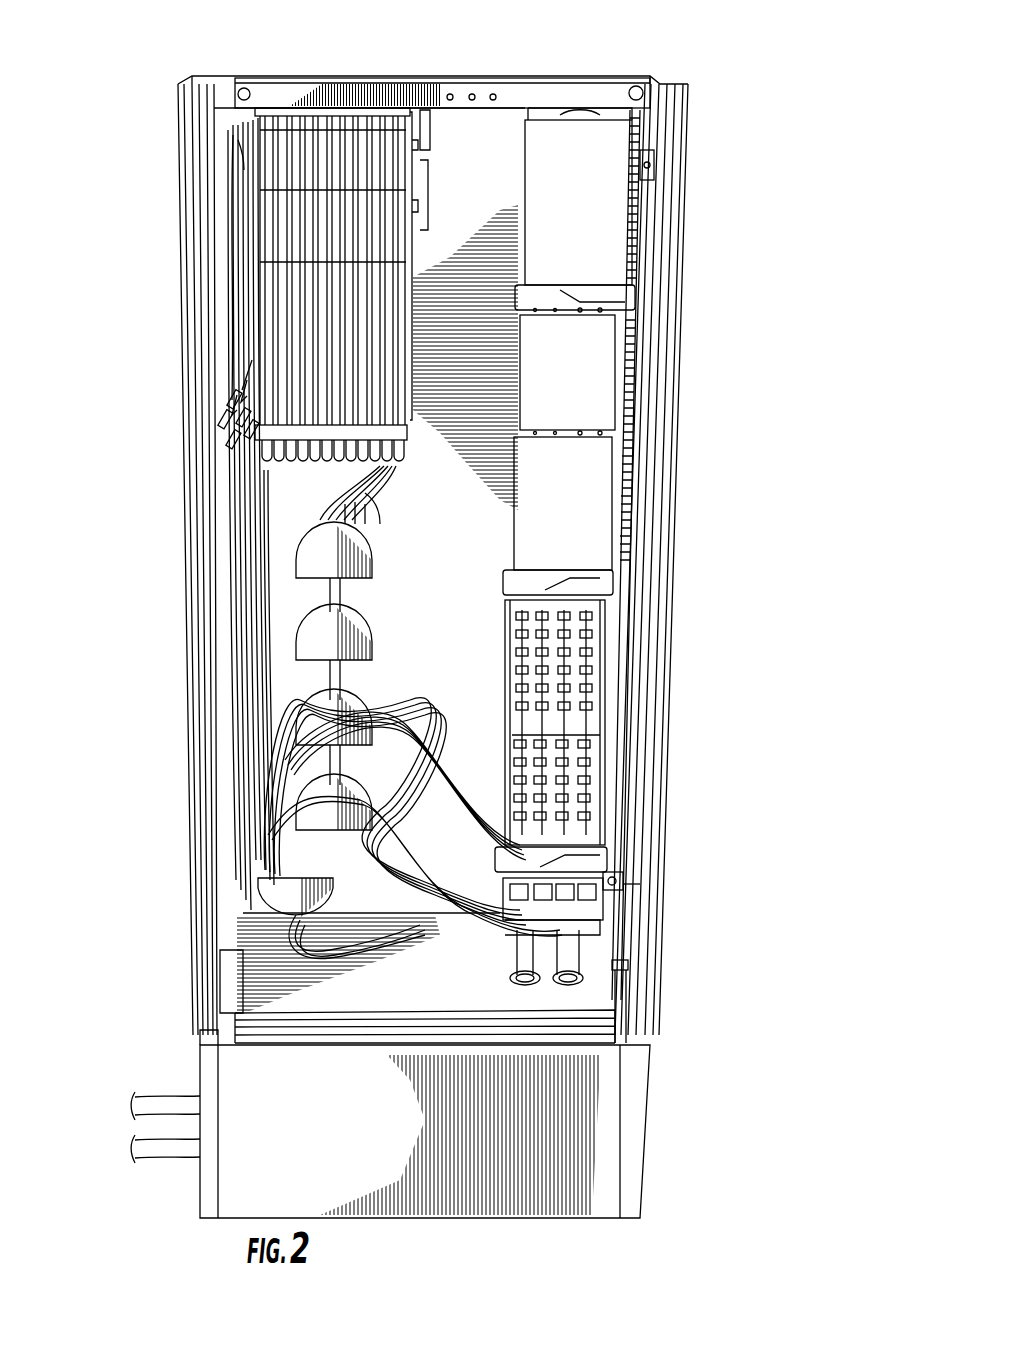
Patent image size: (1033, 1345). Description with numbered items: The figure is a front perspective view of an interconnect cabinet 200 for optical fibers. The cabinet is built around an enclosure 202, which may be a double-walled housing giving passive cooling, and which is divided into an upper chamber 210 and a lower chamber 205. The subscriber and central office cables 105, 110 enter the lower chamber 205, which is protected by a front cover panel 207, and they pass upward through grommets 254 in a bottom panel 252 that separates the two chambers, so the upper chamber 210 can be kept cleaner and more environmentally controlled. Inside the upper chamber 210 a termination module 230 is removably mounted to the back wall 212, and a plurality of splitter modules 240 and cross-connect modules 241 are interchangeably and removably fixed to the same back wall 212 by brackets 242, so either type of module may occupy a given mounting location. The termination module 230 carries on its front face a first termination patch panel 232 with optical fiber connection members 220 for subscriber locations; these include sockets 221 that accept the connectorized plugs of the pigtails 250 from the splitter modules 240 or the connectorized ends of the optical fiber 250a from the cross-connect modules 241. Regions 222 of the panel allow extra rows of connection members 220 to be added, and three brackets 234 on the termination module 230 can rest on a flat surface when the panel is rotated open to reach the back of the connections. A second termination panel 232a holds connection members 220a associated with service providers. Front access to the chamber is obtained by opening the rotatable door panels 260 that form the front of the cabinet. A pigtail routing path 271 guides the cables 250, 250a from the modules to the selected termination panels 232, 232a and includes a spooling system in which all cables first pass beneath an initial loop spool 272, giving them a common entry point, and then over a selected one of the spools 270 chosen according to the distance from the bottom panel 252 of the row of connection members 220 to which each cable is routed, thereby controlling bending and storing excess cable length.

The interconnect cabinet 200 is at (645, 69).
The enclosure 202 is at (572, 78).
The lower chamber 205 is at (605, 1148).
The front cover panel 207 is at (352, 1165).
The upper chamber 210 is at (488, 156).
The back wall 212 is at (455, 548).
The optical fiber connection members 220 is at (662, 843).
The optical fiber connection members 220a is at (592, 903).
The sockets 221 is at (545, 688).
The regions 222 is at (583, 388).
The termination module 230 is at (634, 243).
The first termination patch panel 232 is at (590, 210).
The second termination panel 232a is at (612, 870).
The brackets 234 is at (612, 858).
The splitter modules 240 is at (357, 111).
The cross-connect modules 241 is at (370, 112).
The brackets 242 is at (424, 112).
The connectorized pigtails 250 is at (250, 733).
The optical fiber 250a is at (368, 490).
The bottom panel 252 is at (428, 1005).
The grommets 254 is at (568, 988).
The rotatable door panels 260 is at (205, 1033).
The spools 270 is at (398, 690).
The pigtail routing path 271 is at (229, 529).
The initial loop spool 272 is at (328, 897).
The subscriber cable 105 is at (520, 950).
The cable 110 is at (572, 958).